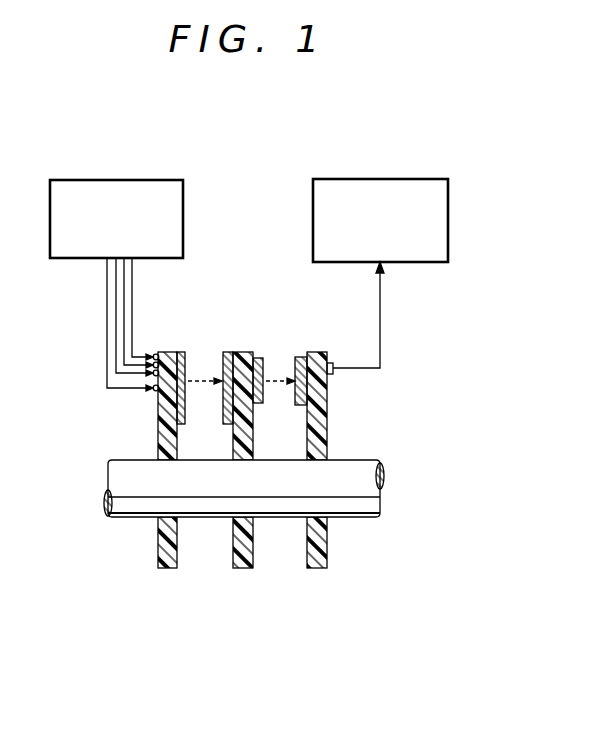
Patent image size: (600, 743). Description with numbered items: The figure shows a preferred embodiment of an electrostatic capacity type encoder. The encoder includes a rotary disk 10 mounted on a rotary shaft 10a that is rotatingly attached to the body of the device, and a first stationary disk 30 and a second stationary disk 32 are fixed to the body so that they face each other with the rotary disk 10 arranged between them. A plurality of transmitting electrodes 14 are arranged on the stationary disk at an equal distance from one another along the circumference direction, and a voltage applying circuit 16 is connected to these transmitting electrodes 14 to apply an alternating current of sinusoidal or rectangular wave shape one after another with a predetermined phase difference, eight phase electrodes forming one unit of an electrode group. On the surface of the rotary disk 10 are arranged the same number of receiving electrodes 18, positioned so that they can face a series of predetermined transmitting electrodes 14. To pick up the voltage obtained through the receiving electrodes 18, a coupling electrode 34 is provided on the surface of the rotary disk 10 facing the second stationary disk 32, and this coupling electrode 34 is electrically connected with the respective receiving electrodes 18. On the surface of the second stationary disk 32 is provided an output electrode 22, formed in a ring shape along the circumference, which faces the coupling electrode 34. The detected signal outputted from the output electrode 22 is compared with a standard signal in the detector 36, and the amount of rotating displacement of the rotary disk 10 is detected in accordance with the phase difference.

The rotary disk 10 is at (240, 569).
The rotary shaft 10a is at (362, 460).
The transmitting electrodes 14 is at (177, 352).
The voltage applying circuit 16 is at (117, 178).
The receiving electrodes 18 is at (227, 352).
The output electrode 22 is at (301, 357).
The first stationary disk 30 is at (166, 569).
The second stationary disk 32 is at (314, 569).
The coupling electrode 34 is at (258, 357).
The detector 36 is at (386, 178).